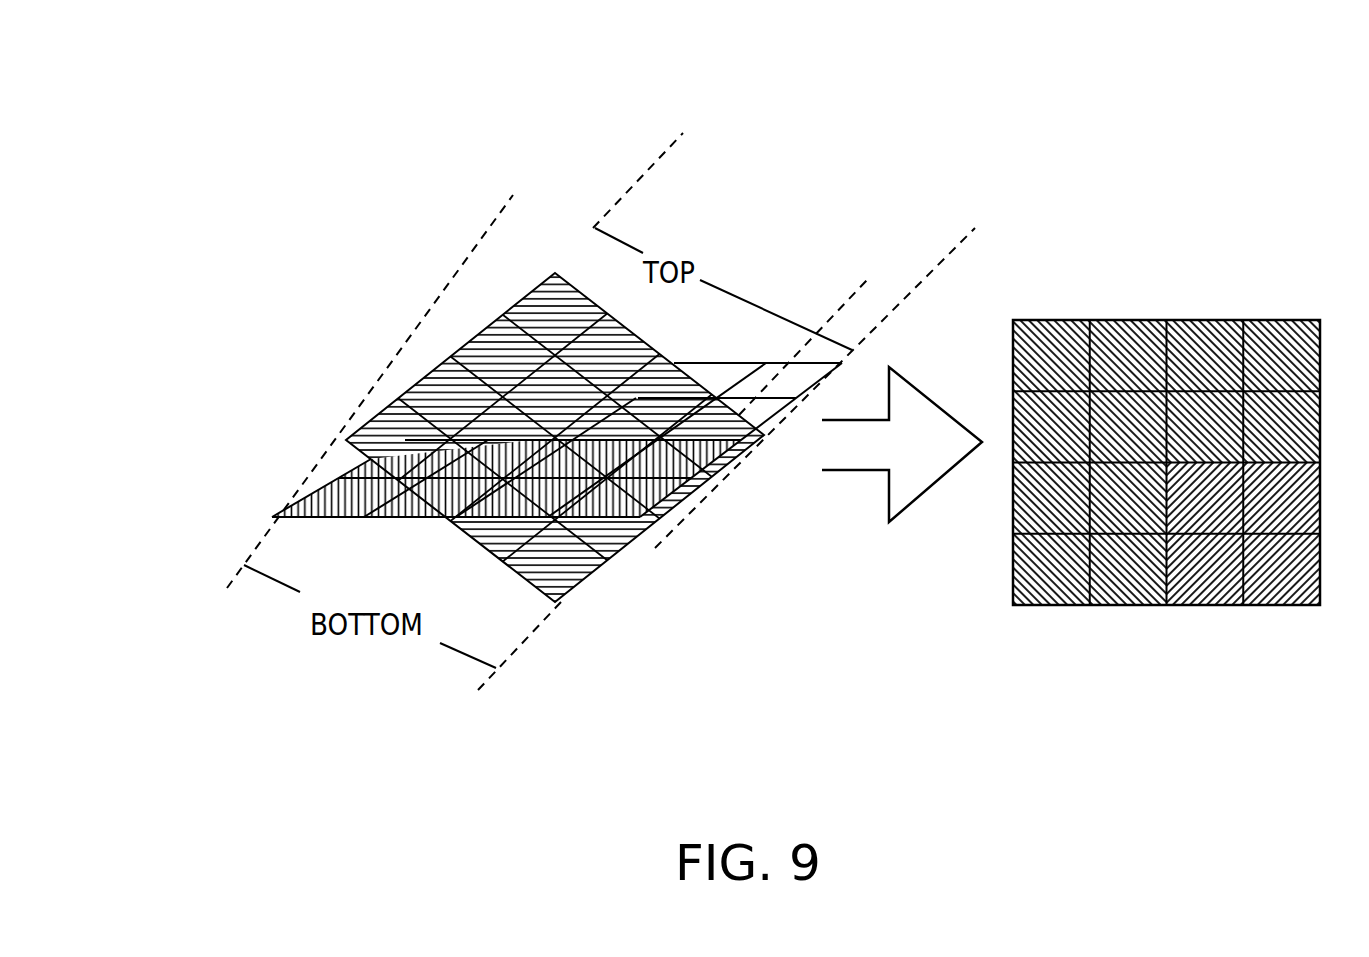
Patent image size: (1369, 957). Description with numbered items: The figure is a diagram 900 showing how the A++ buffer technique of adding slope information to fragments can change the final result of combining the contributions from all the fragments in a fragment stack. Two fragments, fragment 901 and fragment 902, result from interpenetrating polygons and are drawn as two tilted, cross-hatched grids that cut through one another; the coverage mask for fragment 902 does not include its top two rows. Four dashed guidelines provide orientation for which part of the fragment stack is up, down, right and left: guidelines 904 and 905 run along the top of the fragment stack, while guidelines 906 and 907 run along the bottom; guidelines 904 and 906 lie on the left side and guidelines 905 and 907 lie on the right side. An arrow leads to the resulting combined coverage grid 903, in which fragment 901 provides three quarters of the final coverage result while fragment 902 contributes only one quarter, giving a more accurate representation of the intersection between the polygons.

The diagram 900 is at (1091, 790).
The fragment 901 is at (484, 316).
The fragment 902 is at (727, 345).
The resulting rendered texture grid 903 is at (1221, 296).
The guideline 904 is at (604, 188).
The guideline 905 is at (982, 250).
The guideline 906 is at (296, 476).
The guideline 907 is at (531, 656).